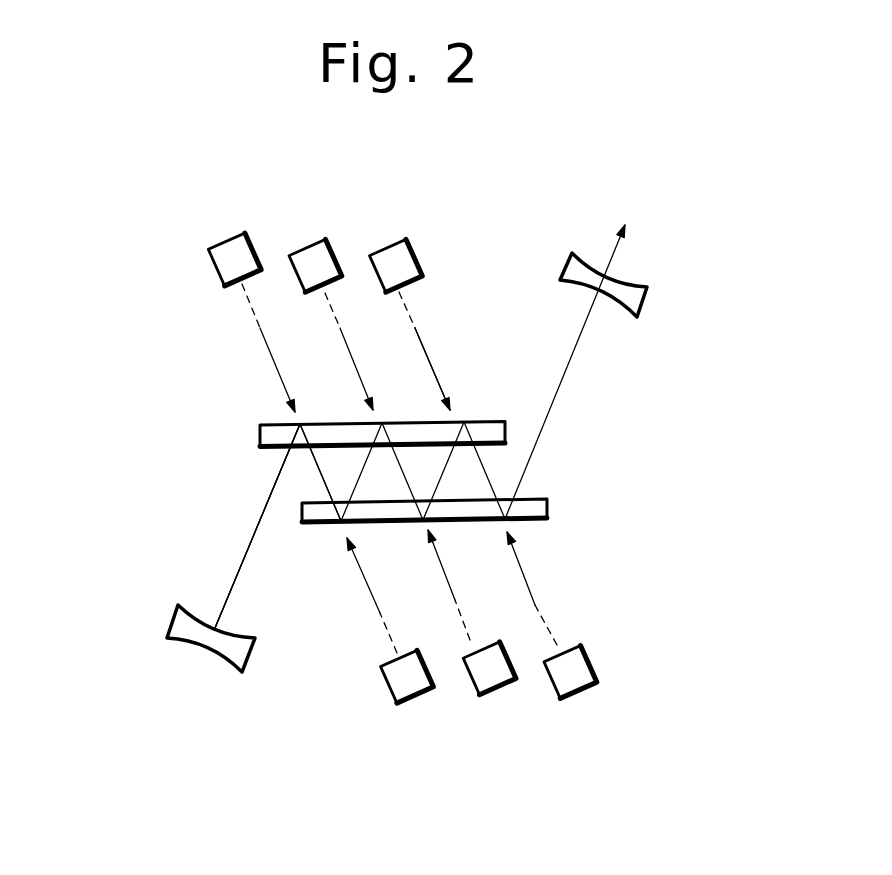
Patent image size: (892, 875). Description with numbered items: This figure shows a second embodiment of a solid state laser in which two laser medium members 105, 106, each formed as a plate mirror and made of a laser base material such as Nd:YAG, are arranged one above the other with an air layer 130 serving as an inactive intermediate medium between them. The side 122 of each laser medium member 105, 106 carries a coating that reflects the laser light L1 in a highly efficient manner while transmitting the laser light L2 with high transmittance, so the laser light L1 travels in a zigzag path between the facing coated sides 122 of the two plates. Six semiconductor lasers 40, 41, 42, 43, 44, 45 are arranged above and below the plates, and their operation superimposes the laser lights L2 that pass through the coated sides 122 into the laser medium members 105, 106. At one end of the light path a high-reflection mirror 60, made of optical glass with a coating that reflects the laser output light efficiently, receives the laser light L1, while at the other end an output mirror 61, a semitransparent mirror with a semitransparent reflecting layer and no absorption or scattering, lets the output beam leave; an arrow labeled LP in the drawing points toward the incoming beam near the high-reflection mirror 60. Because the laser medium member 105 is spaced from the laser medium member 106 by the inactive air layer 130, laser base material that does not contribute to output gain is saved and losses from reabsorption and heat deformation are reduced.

The semiconductor laser 40 is at (224, 240).
The semiconductor laser 41 is at (305, 247).
The semiconductor laser 42 is at (390, 246).
The semiconductor laser 43 is at (414, 695).
The semiconductor laser 44 is at (503, 685).
The semiconductor laser 45 is at (578, 691).
The high-reflection mirror 60 is at (205, 658).
The output mirror 61 is at (643, 300).
The laser medium member 105 is at (270, 425).
The laser medium member 106 is at (548, 512).
The side of laser medium member 122 is at (300, 425).
The air layer 130 is at (320, 463).
The laser light L1 is at (248, 552).
The laser light L2 is at (431, 358).
The light path LP is at (250, 505).